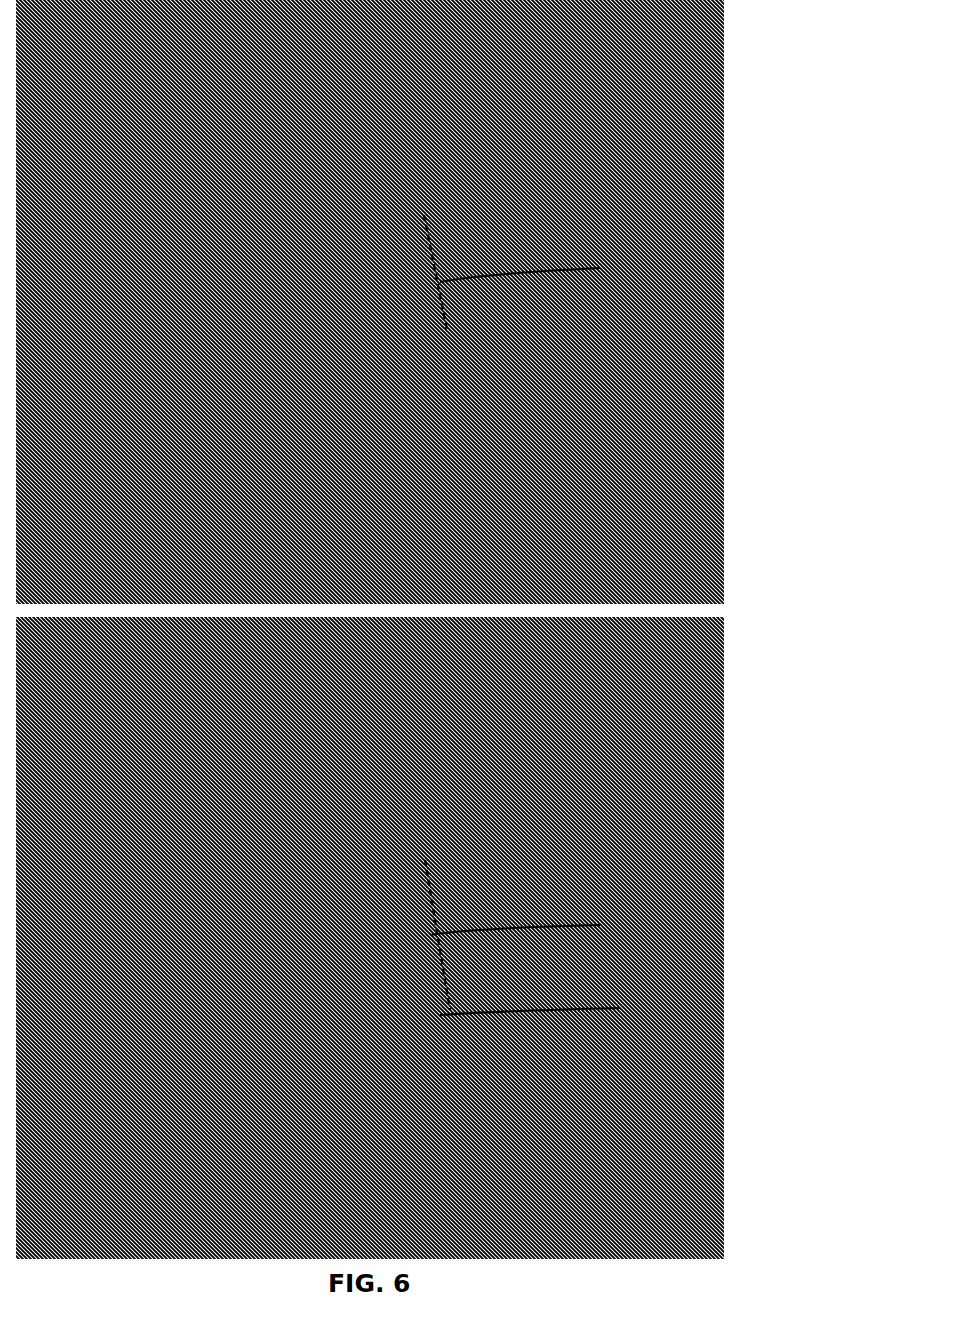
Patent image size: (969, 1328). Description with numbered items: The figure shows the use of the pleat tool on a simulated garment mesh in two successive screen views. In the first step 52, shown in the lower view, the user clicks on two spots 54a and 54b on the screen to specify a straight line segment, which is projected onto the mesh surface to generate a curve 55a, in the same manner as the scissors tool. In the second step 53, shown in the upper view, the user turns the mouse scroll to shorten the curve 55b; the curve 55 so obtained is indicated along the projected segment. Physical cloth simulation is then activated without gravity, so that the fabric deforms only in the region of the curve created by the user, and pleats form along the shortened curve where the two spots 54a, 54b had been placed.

The first step 52 is at (736, 834).
The second step 53 is at (736, 181).
The first spot 54a is at (463, 1009).
The second spot 54b is at (429, 855).
The curve 55 is at (485, 269).
The curve 55a is at (426, 932).
The shortened curve 55b is at (426, 274).